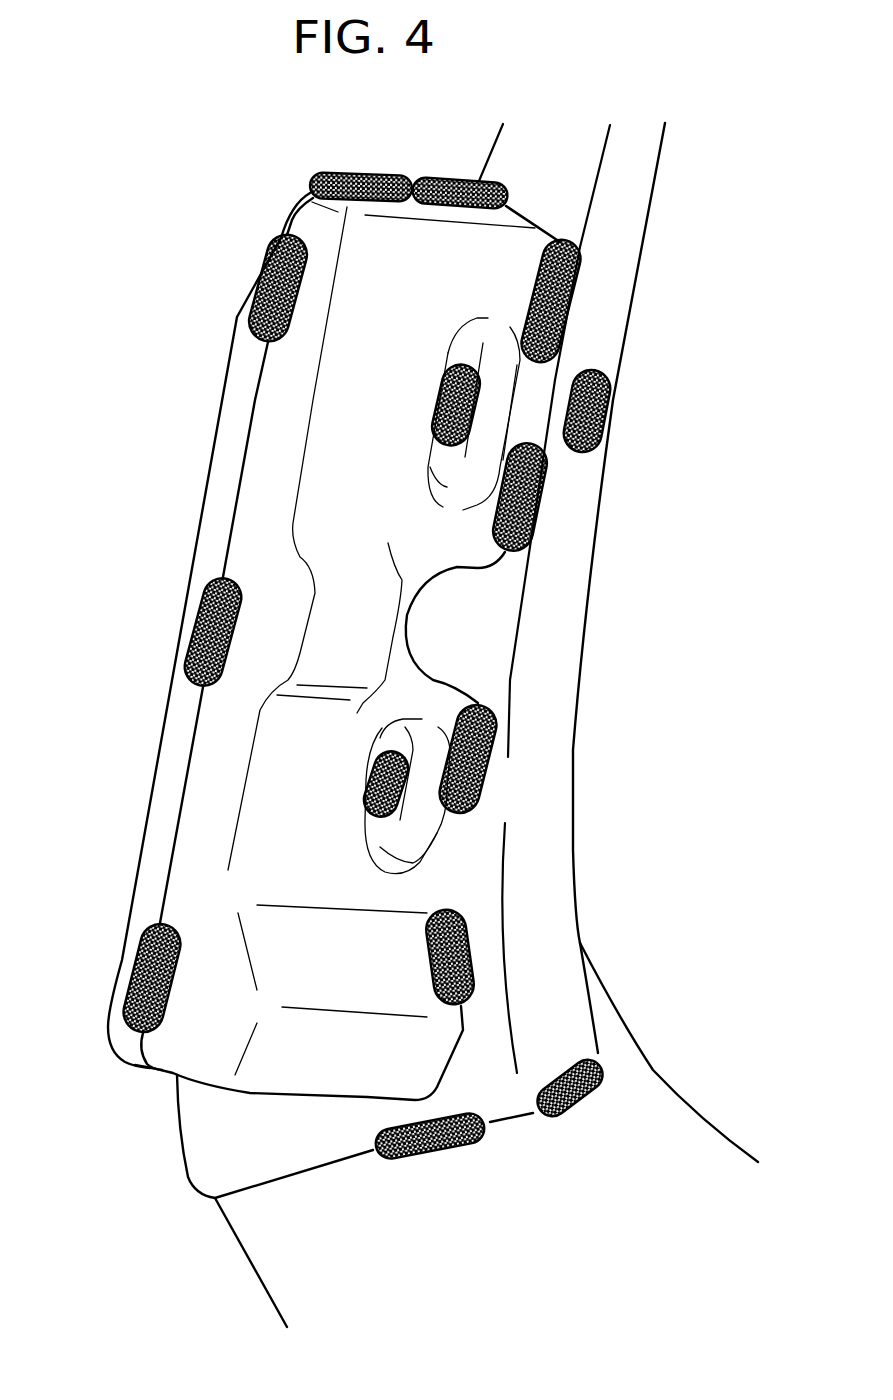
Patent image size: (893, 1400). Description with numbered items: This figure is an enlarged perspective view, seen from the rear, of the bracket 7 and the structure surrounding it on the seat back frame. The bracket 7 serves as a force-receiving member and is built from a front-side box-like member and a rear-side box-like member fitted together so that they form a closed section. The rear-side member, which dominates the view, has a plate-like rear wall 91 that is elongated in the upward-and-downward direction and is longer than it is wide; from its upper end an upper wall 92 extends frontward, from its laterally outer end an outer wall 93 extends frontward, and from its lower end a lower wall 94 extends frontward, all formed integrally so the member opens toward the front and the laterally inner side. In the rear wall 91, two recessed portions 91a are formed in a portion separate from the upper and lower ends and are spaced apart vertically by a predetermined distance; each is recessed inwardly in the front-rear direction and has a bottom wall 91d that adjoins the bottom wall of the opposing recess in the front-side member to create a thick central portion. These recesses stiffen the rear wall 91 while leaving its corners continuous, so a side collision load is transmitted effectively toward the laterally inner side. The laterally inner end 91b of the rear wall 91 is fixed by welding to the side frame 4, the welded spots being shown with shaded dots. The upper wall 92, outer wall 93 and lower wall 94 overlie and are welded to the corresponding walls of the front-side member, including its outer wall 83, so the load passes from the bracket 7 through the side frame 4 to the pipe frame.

The side frame 4 is at (185, 1188).
The bracket 7 is at (190, 182).
The outer wall 83 is at (172, 770).
The rear wall 91 is at (498, 272).
The recessed portion 91a is at (498, 382).
The laterally inner end 91b is at (473, 550).
The bottom wall 91d is at (447, 460).
The upper wall 92 is at (433, 208).
The outer wall 93 is at (202, 833).
The lower wall 94 is at (203, 1083).